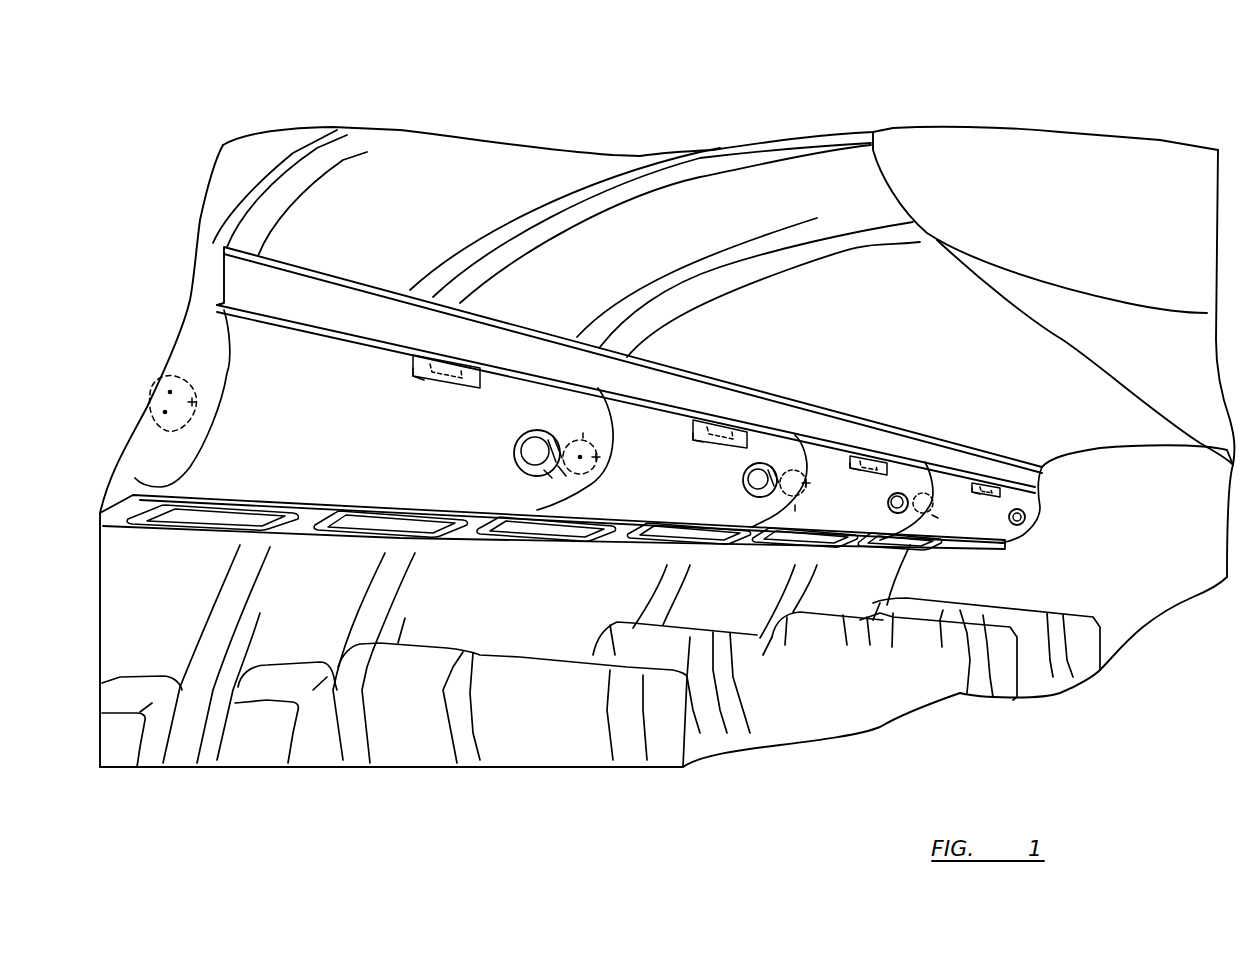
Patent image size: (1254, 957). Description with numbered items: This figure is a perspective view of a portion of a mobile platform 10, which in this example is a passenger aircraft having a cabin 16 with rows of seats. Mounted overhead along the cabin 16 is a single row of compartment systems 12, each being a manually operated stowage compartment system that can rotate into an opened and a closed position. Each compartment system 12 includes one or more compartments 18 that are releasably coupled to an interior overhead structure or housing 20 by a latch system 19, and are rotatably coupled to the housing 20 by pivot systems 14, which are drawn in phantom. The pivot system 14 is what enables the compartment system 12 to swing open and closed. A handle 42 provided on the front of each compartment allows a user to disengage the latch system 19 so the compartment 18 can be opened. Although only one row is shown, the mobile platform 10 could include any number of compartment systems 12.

The mobile platform 10 is at (915, 115).
The compartment system 12 is at (303, 323).
The pivot system 14 is at (150, 413).
The cabin 16 is at (1110, 637).
The compartment 18 is at (487, 387).
The latch system 19 is at (455, 357).
The housing 20 is at (213, 277).
The handle 42 is at (420, 385).